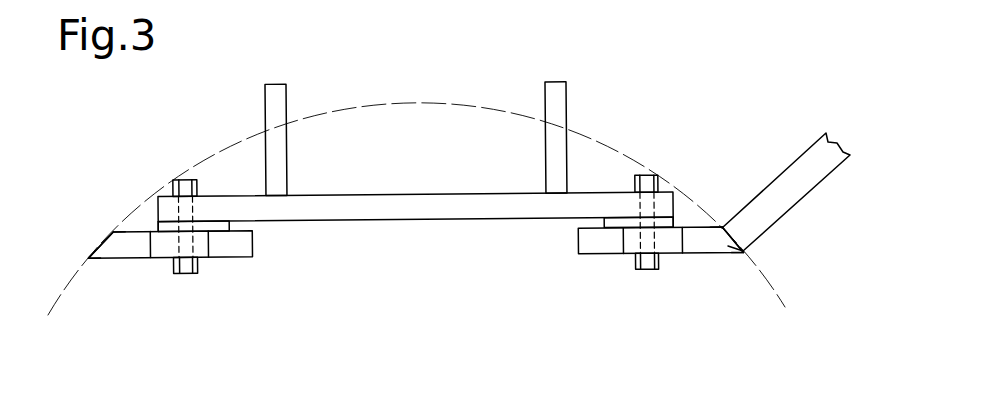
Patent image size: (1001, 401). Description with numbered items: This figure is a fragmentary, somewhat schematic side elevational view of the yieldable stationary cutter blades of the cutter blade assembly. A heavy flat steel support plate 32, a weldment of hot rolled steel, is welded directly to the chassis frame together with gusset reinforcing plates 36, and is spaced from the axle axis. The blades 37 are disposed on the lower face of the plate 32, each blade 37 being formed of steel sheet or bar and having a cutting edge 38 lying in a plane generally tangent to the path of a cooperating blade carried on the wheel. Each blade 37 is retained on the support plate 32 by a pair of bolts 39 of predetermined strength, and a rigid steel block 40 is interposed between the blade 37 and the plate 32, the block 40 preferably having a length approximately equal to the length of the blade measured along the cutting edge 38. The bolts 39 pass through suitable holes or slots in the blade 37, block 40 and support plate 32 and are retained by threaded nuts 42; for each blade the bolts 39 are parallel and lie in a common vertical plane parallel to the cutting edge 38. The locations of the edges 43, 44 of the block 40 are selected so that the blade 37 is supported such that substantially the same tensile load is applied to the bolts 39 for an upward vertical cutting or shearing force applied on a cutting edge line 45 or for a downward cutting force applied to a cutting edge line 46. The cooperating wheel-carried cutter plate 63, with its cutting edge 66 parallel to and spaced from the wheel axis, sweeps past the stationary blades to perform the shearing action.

The support plate 32 is at (375, 195).
The gusset reinforcing plates 36 is at (266, 101).
The blade 37 is at (128, 247).
The cutting edge 38 is at (98, 243).
The bolts 39 is at (188, 179).
The rigid steel block 40 is at (218, 230).
The threaded nuts 42 is at (185, 275).
The edge of the block 43 is at (157, 227).
The edge of the block 44 is at (230, 225).
The cutting edge line 45 is at (92, 258).
The cutting edge line 46 is at (112, 233).
The cutter plate 63 is at (793, 190).
The cutting edge 66 is at (727, 253).